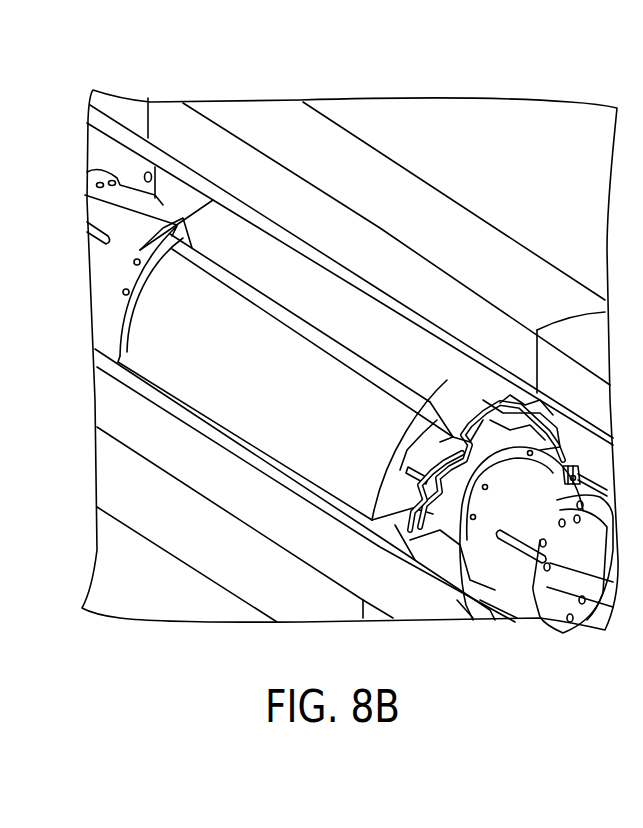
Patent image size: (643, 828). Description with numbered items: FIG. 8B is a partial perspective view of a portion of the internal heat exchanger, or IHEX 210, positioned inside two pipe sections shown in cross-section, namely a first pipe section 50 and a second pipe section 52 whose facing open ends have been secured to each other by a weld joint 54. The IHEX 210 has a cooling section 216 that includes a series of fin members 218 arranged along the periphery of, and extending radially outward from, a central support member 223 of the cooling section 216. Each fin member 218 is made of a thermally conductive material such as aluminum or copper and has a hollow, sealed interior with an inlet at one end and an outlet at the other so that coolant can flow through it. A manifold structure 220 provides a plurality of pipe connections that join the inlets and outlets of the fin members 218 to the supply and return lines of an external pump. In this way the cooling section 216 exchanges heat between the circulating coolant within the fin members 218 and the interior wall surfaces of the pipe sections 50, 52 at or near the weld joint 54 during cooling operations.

The first pipe section 50 is at (118, 107).
The cooling section 216 is at (181, 131).
The weld joint 54 is at (258, 112).
The fin members 218 is at (307, 280).
The IHEX 210 is at (568, 119).
The manifold structure 220 is at (475, 420).
The second pipe section 52 is at (413, 608).
The central support member 223 is at (508, 540).